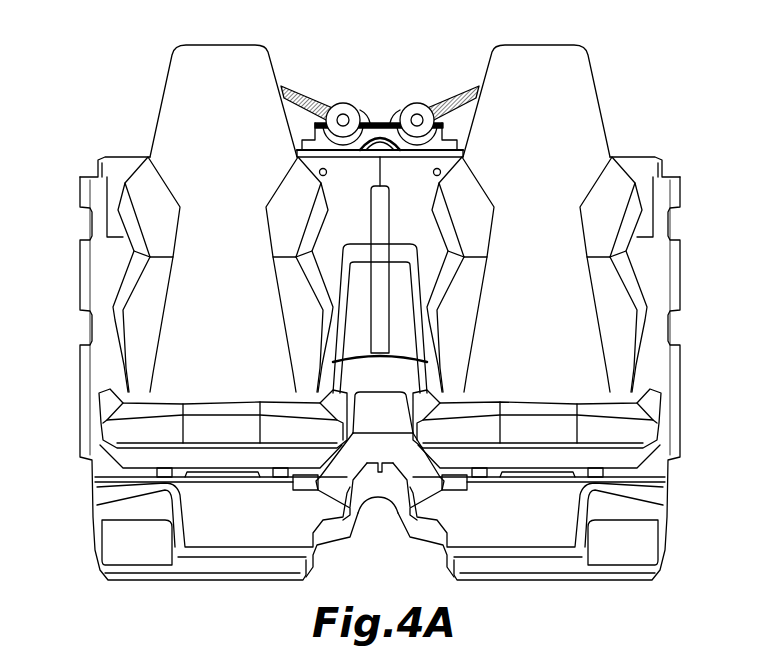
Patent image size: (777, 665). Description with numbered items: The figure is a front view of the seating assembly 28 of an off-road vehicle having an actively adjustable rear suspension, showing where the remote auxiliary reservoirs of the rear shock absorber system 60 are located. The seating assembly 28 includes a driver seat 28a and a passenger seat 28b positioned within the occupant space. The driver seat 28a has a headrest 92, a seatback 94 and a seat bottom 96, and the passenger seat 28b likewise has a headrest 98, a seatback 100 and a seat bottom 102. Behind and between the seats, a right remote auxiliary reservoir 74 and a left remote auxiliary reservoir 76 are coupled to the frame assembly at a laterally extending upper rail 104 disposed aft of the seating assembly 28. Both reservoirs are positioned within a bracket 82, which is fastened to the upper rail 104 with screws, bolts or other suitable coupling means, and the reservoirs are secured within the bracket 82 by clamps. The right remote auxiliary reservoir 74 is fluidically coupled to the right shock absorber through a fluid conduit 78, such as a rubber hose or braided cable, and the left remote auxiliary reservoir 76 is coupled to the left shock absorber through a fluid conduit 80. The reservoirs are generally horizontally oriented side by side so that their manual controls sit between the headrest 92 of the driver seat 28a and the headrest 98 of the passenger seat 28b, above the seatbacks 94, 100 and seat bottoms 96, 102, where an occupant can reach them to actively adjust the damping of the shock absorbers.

The seating assembly 28 is at (610, 129).
The driver seat 28a is at (557, 146).
The passenger seat 28b is at (243, 146).
The rear shock absorber system 60 is at (359, 108).
The right remote auxiliary reservoir 74 is at (347, 106).
The left remote auxiliary reservoir 76 is at (412, 106).
The fluid conduit 78 is at (295, 89).
The fluid conduit 80 is at (463, 88).
The bracket 82 is at (442, 140).
The headrest 92 is at (588, 87).
The seatback 94 is at (573, 297).
The seat bottom 96 is at (540, 405).
The headrest 98 is at (168, 87).
The seatback 100 is at (187, 297).
The seat bottom 102 is at (217, 405).
The upper rail 104 is at (376, 150).